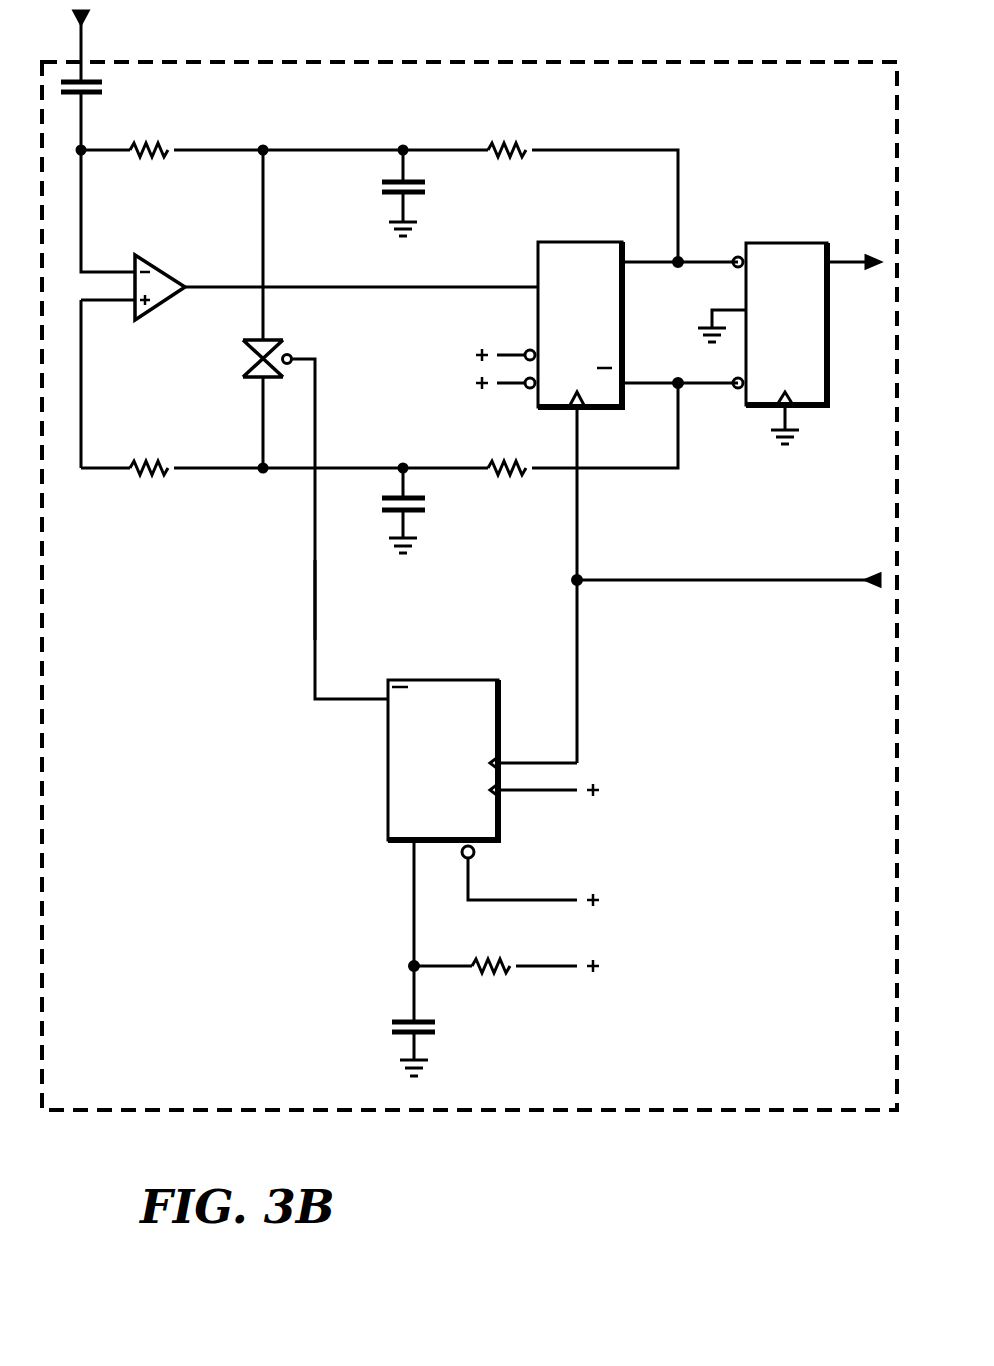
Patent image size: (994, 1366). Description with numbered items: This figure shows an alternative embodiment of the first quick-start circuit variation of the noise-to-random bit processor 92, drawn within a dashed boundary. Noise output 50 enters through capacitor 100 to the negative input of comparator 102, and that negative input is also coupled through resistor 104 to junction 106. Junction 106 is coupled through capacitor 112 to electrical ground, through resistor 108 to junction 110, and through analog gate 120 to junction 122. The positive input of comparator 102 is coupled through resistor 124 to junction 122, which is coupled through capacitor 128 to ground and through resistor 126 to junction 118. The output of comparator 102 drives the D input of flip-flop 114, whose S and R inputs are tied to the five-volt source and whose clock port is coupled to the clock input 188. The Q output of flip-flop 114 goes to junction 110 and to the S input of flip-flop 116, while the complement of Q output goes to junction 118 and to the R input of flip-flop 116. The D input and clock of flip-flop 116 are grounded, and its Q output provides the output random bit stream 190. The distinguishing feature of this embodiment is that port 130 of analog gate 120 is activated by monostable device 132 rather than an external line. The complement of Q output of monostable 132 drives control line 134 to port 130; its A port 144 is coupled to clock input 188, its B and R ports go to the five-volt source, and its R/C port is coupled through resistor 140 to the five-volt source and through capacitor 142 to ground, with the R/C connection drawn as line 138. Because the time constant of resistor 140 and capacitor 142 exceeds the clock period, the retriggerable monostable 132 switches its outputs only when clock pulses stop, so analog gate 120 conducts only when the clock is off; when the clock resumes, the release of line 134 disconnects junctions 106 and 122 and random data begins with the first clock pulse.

The noise output 50 is at (88, 42).
The noise-to-random bit processor 92 is at (733, 1112).
The capacitor 100 is at (106, 86).
The comparator 102 is at (158, 302).
The resistor 104 is at (152, 157).
The junction 106 is at (264, 147).
The resistor 108 is at (512, 142).
The junction 110 is at (680, 258).
The capacitor 112 is at (378, 187).
The flip-flop 114 is at (588, 240).
The flip-flop 116 is at (828, 372).
The junction 118 is at (680, 388).
The analog gate 120 is at (248, 378).
The junction 122 is at (262, 476).
The resistor 124 is at (150, 478).
The resistor 126 is at (506, 440).
The capacitor 128 is at (430, 504).
The port 130 is at (296, 353).
The monostable device 132 is at (386, 786).
The control line 134 is at (312, 598).
The R/C timing line 138 is at (410, 898).
The resistor 140 is at (494, 976).
The capacitor 142 is at (388, 1026).
The A port 144 is at (580, 694).
The clock input 188 is at (780, 582).
The output random bit stream 190 is at (850, 258).